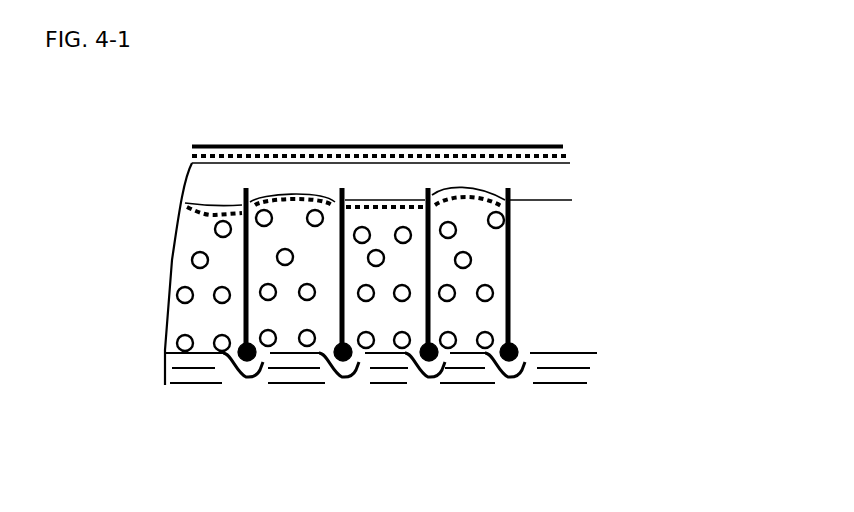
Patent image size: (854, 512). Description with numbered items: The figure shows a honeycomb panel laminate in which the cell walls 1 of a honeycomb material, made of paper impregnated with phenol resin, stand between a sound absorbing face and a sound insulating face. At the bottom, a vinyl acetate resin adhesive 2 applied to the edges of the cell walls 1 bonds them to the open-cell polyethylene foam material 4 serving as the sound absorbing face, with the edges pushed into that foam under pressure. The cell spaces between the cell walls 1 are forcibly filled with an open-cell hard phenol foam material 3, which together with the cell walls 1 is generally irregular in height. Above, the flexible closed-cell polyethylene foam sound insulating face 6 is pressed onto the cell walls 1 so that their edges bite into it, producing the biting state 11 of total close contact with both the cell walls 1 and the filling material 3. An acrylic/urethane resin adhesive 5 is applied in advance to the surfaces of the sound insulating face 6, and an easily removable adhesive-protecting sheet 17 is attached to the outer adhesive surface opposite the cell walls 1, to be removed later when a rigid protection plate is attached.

The adhesive-protecting sheet 17 is at (481, 85).
The sound insulating face 6 is at (468, 143).
The biting state 11 is at (292, 126).
The acrylic/urethane resin adhesive 5 is at (468, 249).
The cell walls 1 is at (511, 240).
The open-cell hard phenol foam material 3 is at (458, 282).
The vinyl acetate resin adhesive 2 is at (527, 343).
The open-cell polyethylene foam material 4 is at (429, 405).